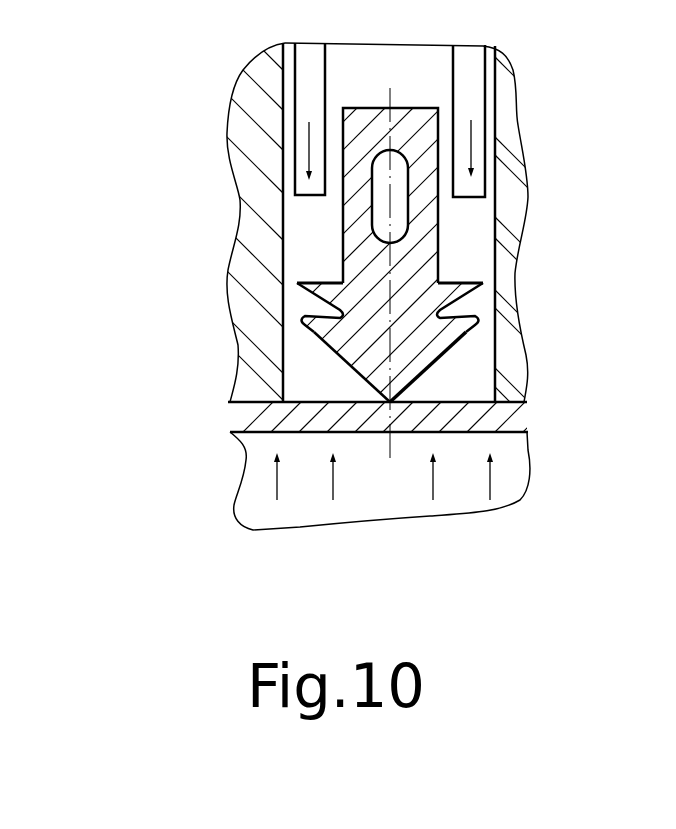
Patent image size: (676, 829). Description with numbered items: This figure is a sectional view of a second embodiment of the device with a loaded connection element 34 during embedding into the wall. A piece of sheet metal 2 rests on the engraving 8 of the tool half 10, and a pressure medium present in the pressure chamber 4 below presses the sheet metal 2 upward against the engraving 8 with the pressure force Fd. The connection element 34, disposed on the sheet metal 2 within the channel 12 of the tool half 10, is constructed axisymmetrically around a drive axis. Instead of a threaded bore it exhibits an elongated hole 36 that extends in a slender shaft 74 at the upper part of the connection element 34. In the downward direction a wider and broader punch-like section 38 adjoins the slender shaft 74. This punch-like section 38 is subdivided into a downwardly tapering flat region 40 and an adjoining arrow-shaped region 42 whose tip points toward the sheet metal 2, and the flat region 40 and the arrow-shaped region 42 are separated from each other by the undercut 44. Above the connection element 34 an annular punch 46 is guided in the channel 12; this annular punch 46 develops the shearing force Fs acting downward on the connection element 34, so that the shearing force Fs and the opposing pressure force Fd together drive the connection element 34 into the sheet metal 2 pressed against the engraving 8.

The tool half 10 is at (257, 77).
The annular punch 46 is at (298, 97).
The slender shaft 74 is at (350, 147).
The elongated hole 36 is at (377, 177).
The connection element 34 is at (308, 215).
The channel 12 is at (295, 243).
The downwardly tapering flat region 40 is at (292, 292).
The arrow-shaped region 42 is at (360, 350).
The punch-like section 38 is at (300, 366).
The engraving 8 is at (240, 403).
The sheet metal 2 is at (250, 422).
The pressure chamber 4 is at (253, 508).
The undercut 44 is at (478, 297).